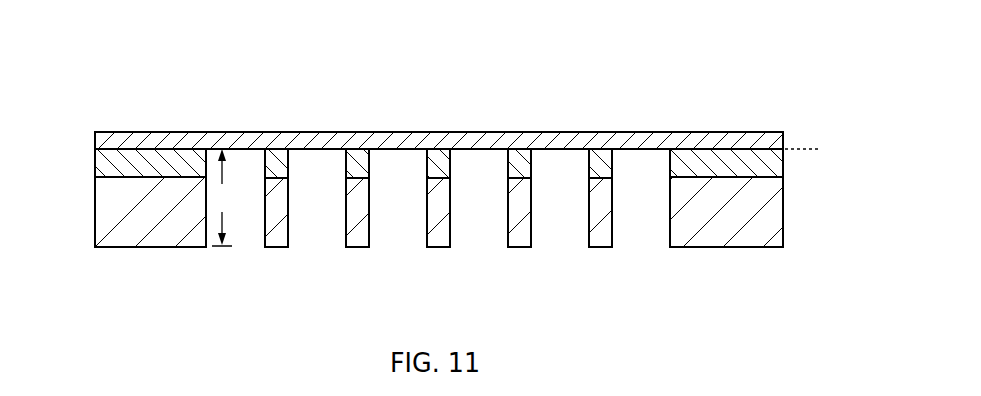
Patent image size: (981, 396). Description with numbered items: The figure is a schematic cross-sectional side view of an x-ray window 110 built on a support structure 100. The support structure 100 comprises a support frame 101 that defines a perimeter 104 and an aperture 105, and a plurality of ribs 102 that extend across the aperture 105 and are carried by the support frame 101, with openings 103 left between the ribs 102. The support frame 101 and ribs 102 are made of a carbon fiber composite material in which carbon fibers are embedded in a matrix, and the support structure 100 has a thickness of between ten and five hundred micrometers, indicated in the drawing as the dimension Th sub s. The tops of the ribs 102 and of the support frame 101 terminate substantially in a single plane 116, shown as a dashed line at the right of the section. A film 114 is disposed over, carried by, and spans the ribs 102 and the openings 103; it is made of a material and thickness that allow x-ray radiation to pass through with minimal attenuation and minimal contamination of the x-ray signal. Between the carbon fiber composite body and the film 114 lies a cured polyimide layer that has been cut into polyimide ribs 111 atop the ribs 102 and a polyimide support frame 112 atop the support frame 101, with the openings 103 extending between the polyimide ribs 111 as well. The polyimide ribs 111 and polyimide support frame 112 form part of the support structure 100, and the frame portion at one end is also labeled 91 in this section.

The assembly 110 is at (140, 50).
The aperture 105 is at (461, 172).
The film 114 is at (318, 131).
The polyimide ribs 111 is at (603, 158).
The polyimide support frame 112 is at (108, 165).
The single plane 116 is at (798, 148).
The support structure 100 is at (441, 236).
The support frame 101 is at (145, 240).
The ribs 102 is at (360, 233).
The openings 103 is at (395, 218).
The right block body 91 is at (723, 233).
The perimeter 104 is at (718, 234).